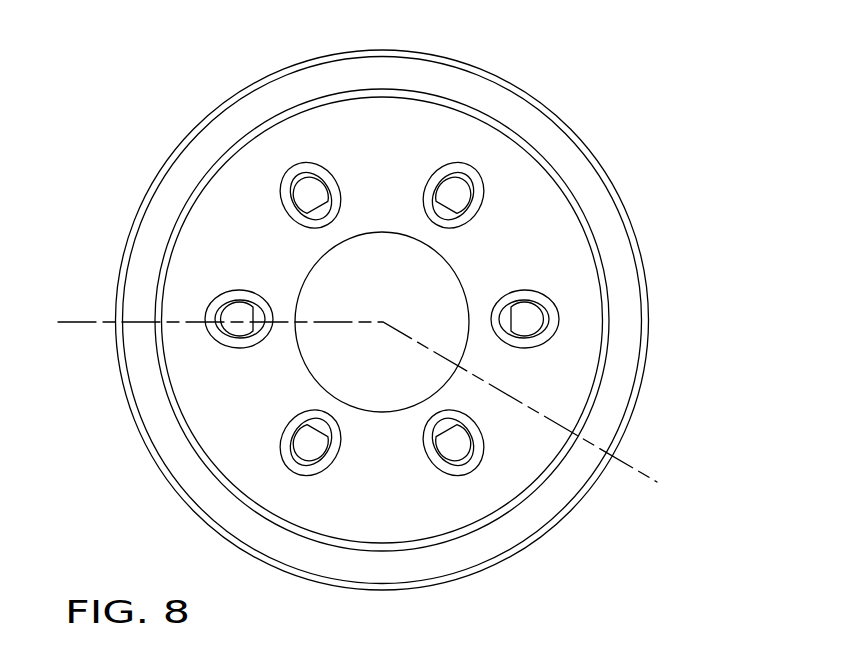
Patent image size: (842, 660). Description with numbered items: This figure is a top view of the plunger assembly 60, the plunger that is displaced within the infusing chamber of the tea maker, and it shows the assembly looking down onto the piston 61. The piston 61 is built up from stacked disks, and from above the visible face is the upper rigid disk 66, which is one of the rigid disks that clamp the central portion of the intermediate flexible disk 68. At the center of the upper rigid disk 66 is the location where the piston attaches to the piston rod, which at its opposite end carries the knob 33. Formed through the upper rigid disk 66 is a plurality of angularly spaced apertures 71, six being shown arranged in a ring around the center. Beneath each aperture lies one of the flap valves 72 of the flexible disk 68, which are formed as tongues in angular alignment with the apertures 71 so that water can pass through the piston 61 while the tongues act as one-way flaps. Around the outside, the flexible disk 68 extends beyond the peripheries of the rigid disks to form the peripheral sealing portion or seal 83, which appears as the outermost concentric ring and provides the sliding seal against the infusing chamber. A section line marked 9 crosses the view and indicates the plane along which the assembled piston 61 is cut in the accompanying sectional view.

The plunger assembly 60 is at (592, 96).
The piston 61 is at (648, 214).
The knob 33 is at (438, 288).
The upper rigid disk 66 is at (577, 287).
The intermediate flexible disk 68 is at (622, 326).
The peripheral sealing portion 83 is at (645, 363).
The apertures 71 is at (283, 467).
The flap valves 72 is at (303, 447).
The section line 9- 9 is at (58, 280).